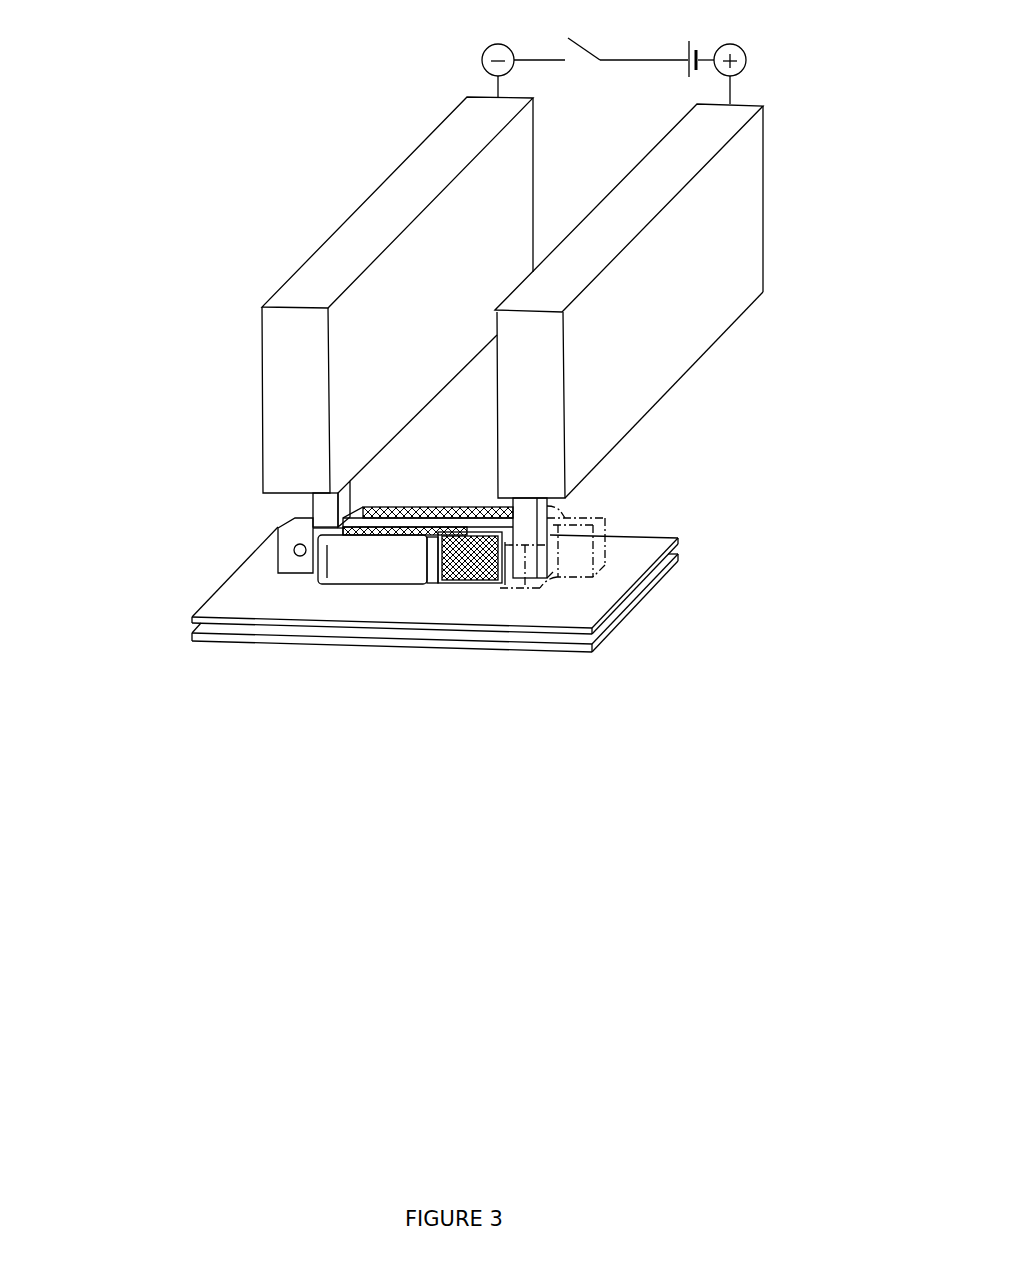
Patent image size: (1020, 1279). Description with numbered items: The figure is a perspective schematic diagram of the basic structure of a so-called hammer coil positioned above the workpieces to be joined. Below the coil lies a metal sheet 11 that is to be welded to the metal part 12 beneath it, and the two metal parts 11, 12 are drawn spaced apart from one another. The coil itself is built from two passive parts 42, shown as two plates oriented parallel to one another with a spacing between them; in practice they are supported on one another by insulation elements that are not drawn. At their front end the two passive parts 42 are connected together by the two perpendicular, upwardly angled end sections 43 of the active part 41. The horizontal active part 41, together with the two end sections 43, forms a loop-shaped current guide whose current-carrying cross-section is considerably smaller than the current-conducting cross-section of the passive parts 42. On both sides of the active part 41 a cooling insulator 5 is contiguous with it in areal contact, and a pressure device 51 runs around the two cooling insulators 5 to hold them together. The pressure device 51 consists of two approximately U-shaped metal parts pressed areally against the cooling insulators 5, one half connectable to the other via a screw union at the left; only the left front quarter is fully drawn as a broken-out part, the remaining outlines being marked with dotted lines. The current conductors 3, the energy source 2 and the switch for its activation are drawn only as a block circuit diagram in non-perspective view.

The energy source 2 is at (687, 43).
The current conductors 3 is at (481, 56).
The passive parts 42 is at (405, 190).
The end sections 43 is at (327, 508).
The active part 41 is at (368, 520).
The cooling insulator 5 is at (456, 648).
The pressure device 51 is at (370, 568).
The metal sheet 11 is at (243, 597).
The metal part 12 is at (623, 607).